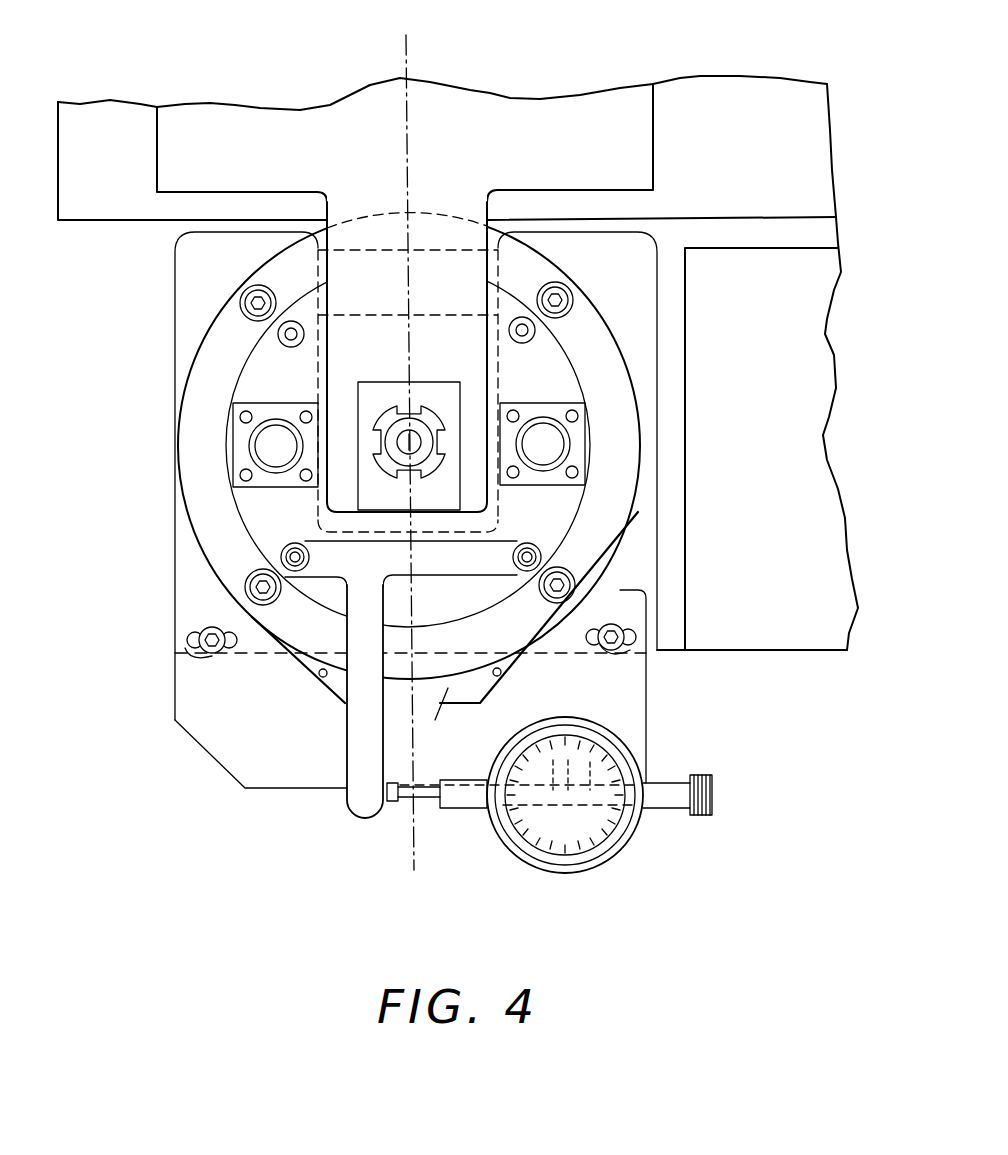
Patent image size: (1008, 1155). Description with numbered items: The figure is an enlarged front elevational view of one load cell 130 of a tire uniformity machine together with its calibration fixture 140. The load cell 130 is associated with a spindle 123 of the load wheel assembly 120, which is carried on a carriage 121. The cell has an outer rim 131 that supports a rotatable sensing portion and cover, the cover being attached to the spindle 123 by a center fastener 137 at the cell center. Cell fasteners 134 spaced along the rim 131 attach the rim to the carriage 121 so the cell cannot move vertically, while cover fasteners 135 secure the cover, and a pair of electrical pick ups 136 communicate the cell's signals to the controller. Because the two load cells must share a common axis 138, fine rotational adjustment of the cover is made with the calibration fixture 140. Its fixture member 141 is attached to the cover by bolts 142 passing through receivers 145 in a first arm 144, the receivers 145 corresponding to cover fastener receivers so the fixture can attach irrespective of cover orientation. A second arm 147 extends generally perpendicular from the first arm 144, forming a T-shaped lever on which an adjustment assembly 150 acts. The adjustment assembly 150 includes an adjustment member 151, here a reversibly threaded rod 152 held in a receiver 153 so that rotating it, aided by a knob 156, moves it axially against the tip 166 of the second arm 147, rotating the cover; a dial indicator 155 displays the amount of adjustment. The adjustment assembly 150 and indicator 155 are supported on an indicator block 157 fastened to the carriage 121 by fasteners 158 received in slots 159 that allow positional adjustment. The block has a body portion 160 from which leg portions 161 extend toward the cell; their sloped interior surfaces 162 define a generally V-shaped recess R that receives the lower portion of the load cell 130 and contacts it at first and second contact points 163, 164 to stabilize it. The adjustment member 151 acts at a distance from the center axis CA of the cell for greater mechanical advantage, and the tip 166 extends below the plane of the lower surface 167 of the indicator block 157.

The load wheel assembly 120 is at (150, 232).
The carriage 121 is at (825, 232).
The spindle 123 is at (455, 205).
The load cell 130 is at (254, 375).
The outer rim 131 is at (203, 490).
The cell fasteners 134 is at (556, 282).
The cover fasteners 135 is at (278, 339).
The electrical pick ups 136 is at (265, 447).
The center fastener 137 is at (402, 433).
The common axis 138 is at (404, 62).
The calibration fixture 140 is at (317, 645).
The fixture member 141 is at (503, 543).
The bolts 142 is at (283, 566).
The first arm 144 is at (333, 621).
The receivers 145 is at (293, 543).
The second arm 147 is at (247, 788).
The adjustment assembly 150 is at (442, 820).
The adjustment member 151 is at (437, 777).
The threaded rod 152 is at (410, 800).
The receiver 153 is at (470, 800).
The indicator 155 is at (611, 848).
The knob 156 is at (714, 785).
The indicator block 157 is at (633, 718).
The fasteners 158 is at (212, 656).
The slots 159 is at (205, 642).
The body portion 160 is at (240, 753).
The first leg portion 161 is at (190, 598).
The interior surfaces 162 is at (320, 680).
The first contact point 163 is at (225, 607).
The second contact point 164 is at (583, 603).
The tip 166 is at (358, 812).
The lower surface 167 is at (297, 790).
The center axis CA is at (417, 440).
The recess R is at (434, 722).